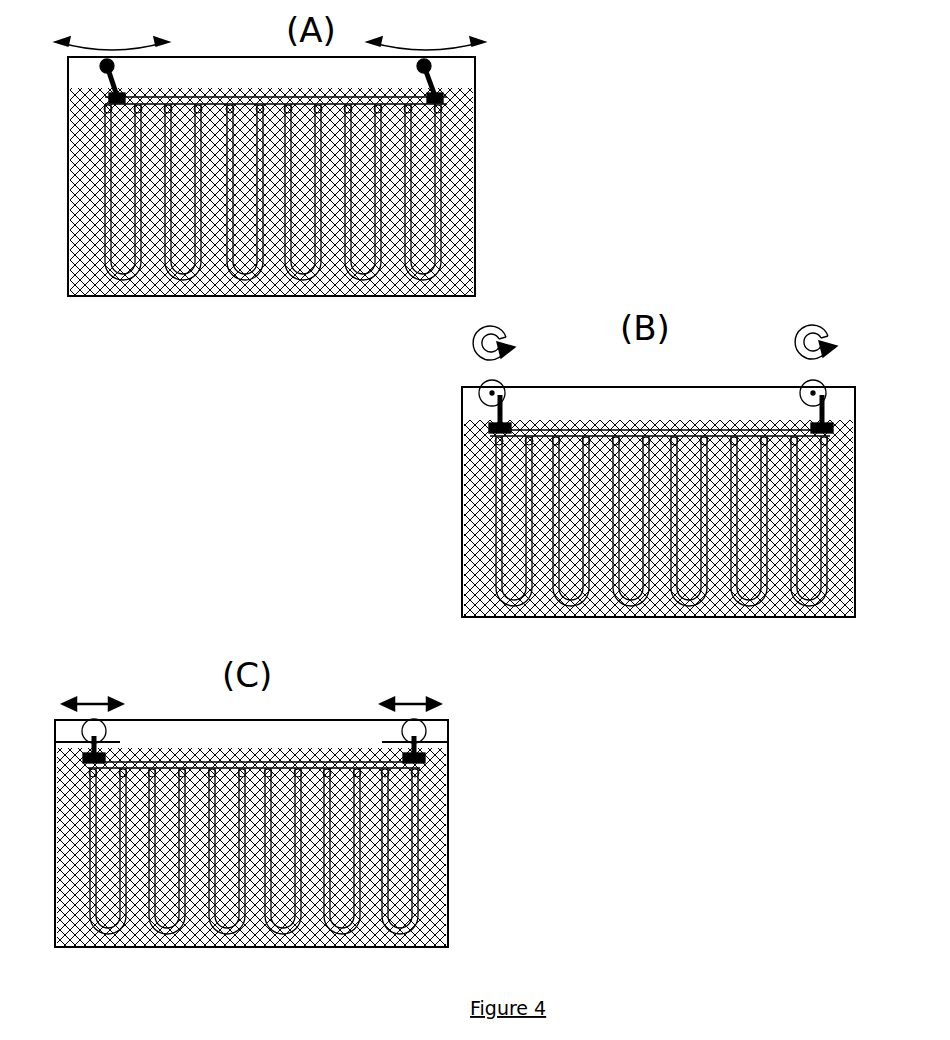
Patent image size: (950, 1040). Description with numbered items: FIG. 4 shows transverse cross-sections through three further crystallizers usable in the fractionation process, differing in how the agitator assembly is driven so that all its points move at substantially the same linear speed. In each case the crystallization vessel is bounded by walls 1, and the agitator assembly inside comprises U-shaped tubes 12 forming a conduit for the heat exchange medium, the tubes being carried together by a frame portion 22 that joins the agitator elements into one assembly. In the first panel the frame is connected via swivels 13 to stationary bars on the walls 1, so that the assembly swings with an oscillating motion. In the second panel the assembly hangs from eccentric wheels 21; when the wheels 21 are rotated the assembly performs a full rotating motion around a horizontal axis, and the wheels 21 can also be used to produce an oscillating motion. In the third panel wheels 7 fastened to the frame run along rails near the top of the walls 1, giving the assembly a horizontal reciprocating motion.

The longitudinal walls 1 is at (478, 170).
The U-shaped tubes 12 is at (635, 605).
The frame portion 22 is at (680, 420).
The swivels 13 is at (437, 78).
The eccentric wheels 21 is at (478, 388).
The wheels 7 is at (418, 728).